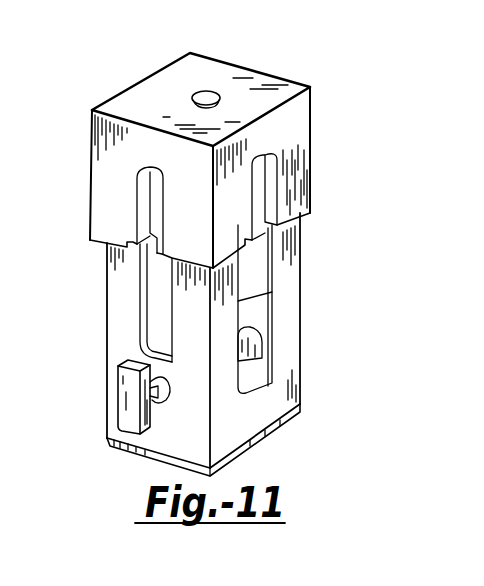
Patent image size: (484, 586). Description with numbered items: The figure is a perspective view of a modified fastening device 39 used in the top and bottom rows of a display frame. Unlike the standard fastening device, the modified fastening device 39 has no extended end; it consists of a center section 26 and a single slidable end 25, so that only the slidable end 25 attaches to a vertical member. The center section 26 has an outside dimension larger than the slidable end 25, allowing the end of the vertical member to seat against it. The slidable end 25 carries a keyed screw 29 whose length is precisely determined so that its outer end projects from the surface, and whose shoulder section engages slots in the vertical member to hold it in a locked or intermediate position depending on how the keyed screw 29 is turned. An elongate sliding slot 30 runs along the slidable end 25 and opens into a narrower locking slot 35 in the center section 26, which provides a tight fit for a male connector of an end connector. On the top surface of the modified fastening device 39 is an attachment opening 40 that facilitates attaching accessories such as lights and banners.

The slidable end 25 is at (301, 388).
The center section 26 is at (311, 210).
The keyed screw 29 is at (127, 421).
The sliding slot 30 is at (253, 320).
The locking slot 35 is at (270, 183).
The modified fastening device 39 is at (297, 418).
The attachment opening 40 is at (208, 90).